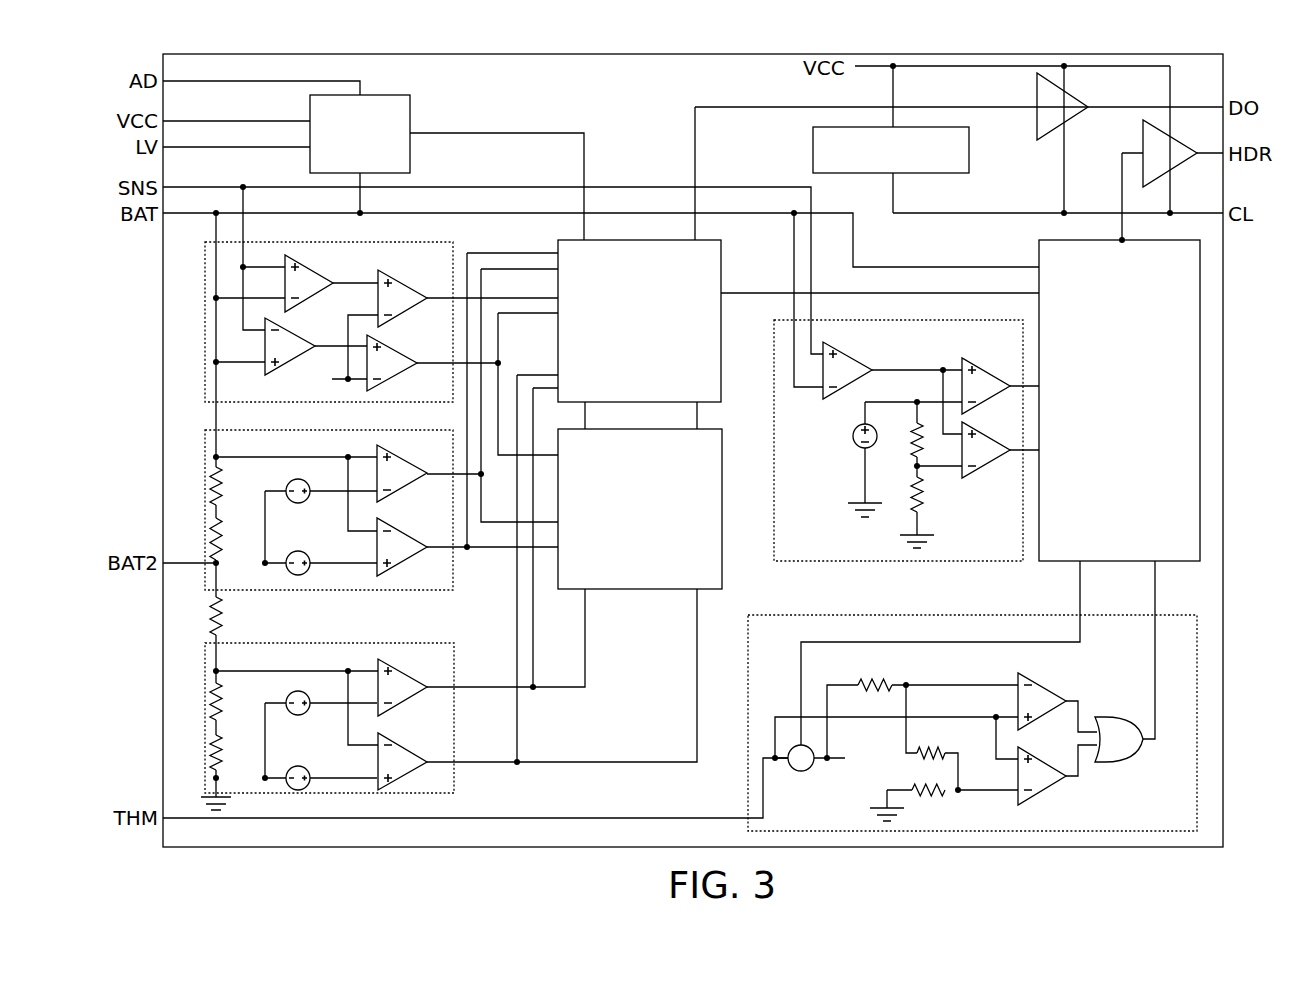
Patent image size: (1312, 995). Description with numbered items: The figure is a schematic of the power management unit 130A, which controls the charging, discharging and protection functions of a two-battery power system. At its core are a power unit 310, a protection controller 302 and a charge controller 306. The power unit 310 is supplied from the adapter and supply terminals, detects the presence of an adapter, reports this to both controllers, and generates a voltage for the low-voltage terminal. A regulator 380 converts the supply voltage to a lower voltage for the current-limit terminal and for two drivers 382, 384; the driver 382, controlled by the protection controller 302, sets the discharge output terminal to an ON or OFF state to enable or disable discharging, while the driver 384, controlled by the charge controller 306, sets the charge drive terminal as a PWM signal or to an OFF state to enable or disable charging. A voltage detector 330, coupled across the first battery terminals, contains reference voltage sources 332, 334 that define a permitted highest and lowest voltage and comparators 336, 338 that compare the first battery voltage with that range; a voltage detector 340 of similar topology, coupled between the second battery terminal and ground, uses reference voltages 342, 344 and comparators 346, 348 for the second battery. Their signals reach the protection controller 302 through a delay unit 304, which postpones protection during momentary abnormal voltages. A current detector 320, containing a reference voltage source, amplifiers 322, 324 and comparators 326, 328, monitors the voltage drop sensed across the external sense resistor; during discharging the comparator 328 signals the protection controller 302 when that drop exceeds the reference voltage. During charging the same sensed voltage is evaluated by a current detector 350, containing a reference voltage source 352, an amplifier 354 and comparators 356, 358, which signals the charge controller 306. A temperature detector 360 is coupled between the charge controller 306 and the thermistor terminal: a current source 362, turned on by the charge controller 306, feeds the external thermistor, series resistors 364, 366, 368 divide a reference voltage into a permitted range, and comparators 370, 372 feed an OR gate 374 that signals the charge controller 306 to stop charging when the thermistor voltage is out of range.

The power management unit 130A is at (155, 51).
The protection controller 302 is at (721, 285).
The delay unit 304 is at (722, 532).
The charge controller 306 is at (1039, 250).
The power unit 310 is at (390, 95).
The current detector 320 is at (311, 322).
The amplifier 322 is at (312, 271).
The amplifier 324 is at (292, 332).
The comparator 326 is at (392, 286).
The comparator 328 is at (392, 348).
The voltage detector 330 is at (311, 510).
The reference voltage source 332 is at (289, 483).
The reference voltage source 334 is at (292, 553).
The comparator 336 is at (392, 456).
The comparator 338 is at (392, 531).
The voltage detector 340 is at (313, 718).
The reference voltage source 342 is at (289, 695).
The reference voltage source 344 is at (292, 768).
The comparator 346 is at (392, 671).
The comparator 348 is at (392, 746).
The current detector 350 is at (886, 440).
The reference voltage source 352 is at (853, 438).
The amplifier 354 is at (847, 354).
The comparator 356 is at (972, 366).
The comparator 358 is at (986, 471).
The temperature detector 360 is at (972, 696).
The current source 362 is at (806, 771).
The resistor 364 is at (870, 680).
The resistor 366 is at (915, 748).
The resistor 368 is at (918, 797).
The comparator 370 is at (1031, 681).
The comparator 372 is at (1030, 797).
The OR gate 374 is at (1125, 762).
The regulator 380 is at (813, 143).
The driver 382 is at (1037, 118).
The driver 384 is at (1143, 144).